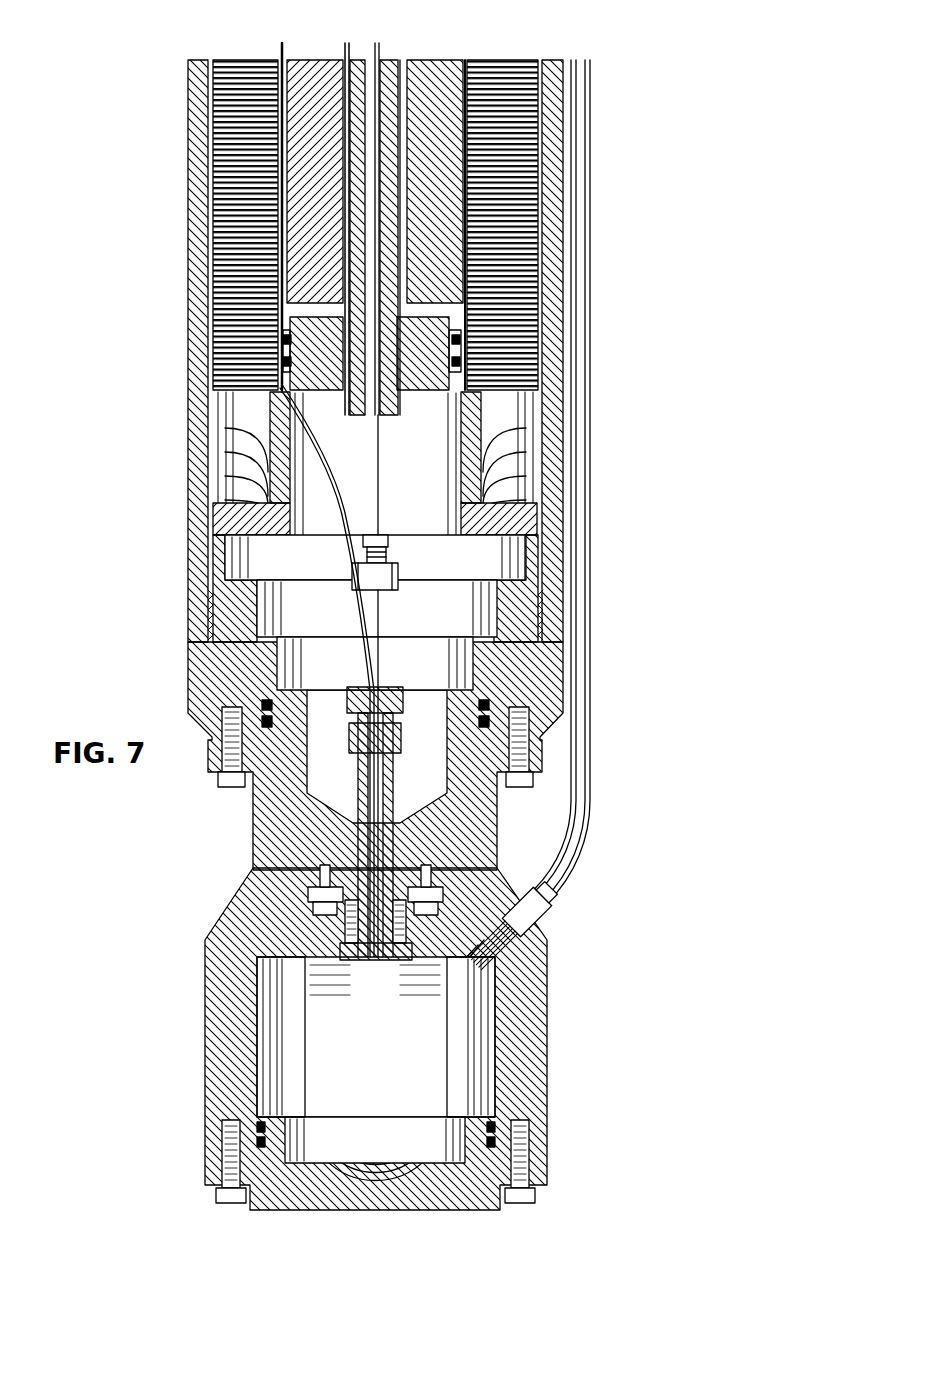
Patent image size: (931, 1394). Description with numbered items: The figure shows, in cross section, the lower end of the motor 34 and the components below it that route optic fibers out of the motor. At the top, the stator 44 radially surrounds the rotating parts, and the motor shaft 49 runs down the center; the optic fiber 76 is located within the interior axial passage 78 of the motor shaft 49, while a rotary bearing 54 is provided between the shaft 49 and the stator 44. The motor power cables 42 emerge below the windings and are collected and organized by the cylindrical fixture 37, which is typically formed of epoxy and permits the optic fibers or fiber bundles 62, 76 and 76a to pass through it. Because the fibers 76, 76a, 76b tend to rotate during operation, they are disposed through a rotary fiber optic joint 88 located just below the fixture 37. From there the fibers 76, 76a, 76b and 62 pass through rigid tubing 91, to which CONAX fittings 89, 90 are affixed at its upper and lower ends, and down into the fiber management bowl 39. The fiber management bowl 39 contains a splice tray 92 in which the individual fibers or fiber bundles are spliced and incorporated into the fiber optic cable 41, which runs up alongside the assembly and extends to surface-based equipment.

The motor 34 is at (179, 198).
The stator 44 is at (212, 252).
The motor shaft 49 is at (392, 61).
The interior axial passage 78 is at (371, 61).
The rotary bearing 54 is at (290, 318).
The motor power cables 42 is at (222, 416).
The cylindrical fixture 37 is at (222, 505).
The optic fiber bundle 62 is at (338, 588).
The rotary fiber optic joint 88 is at (398, 572).
The CONAX fitting 89 is at (262, 694).
The rigid tubing 91 is at (355, 800).
The optic fiber 76a is at (352, 468).
The optic fiber 76b is at (328, 680).
The optic fiber 76 is at (380, 490).
The fiber management bowl 39 is at (200, 1009).
The splice tray 92 is at (312, 1000).
The CONAX fitting 90 is at (337, 927).
The fiber optic cable 41 is at (582, 292).